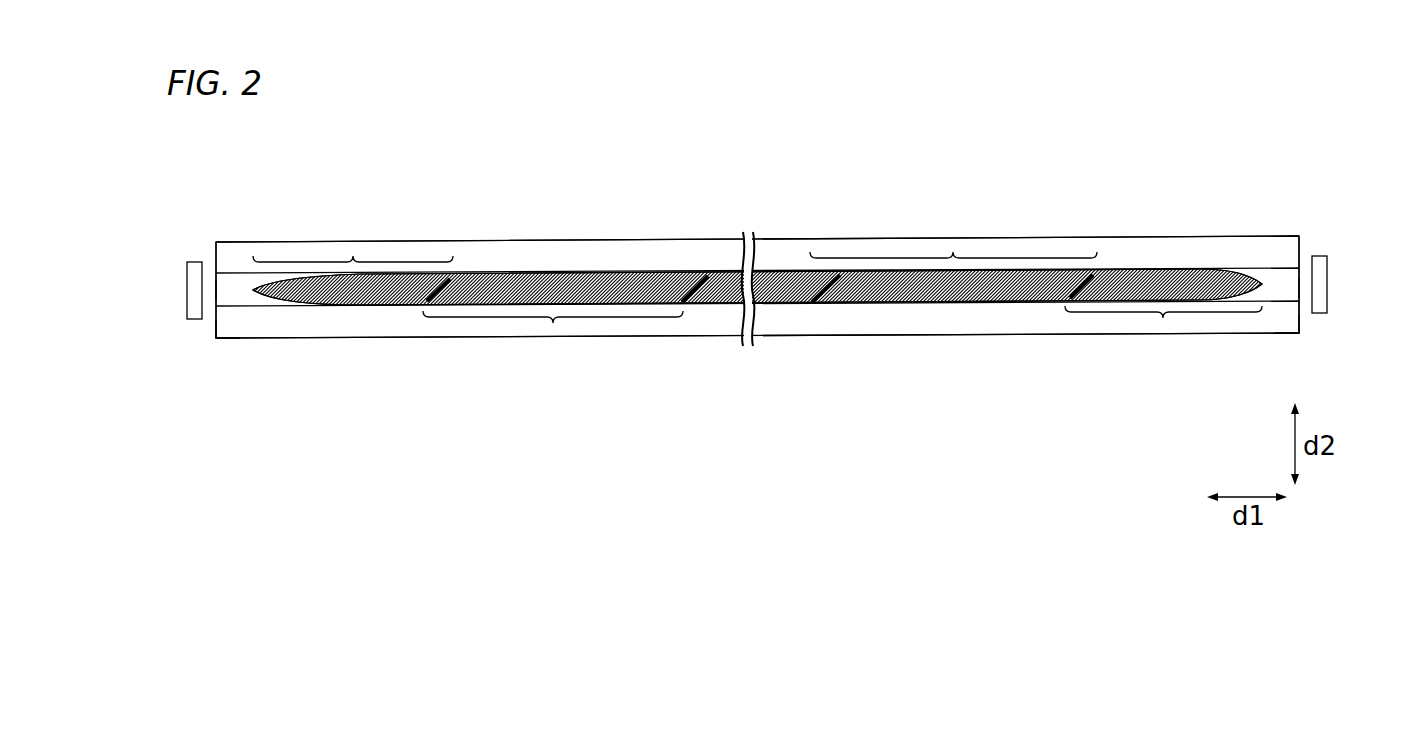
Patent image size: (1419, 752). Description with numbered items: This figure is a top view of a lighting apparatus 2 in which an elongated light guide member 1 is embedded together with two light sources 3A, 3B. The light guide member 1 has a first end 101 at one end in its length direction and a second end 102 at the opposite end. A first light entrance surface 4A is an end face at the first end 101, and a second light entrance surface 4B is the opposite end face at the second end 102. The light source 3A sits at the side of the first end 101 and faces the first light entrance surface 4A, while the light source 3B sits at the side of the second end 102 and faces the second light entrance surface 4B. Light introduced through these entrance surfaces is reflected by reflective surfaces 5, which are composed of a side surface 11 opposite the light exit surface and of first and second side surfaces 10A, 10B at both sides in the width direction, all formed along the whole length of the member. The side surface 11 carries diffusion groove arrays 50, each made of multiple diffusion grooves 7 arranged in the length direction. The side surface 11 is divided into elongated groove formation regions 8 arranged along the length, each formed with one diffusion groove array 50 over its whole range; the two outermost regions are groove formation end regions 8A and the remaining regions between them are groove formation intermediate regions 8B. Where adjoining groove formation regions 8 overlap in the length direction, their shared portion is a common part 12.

The light guide member 1 is at (1098, 243).
The lighting apparatus 2 is at (869, 208).
The light source 3A is at (187, 280).
The light source 3B is at (1327, 271).
The first light entrance surface 4A is at (215, 291).
The second light entrance surface 4B is at (1299, 288).
The reflective surface 5 is at (1247, 327).
The diffusion groove 7 is at (503, 288).
The groove formation region 8 is at (757, 287).
The groove formation end region 8A is at (353, 256).
The groove formation intermediate region 8B is at (553, 323).
The first side surface 10A is at (705, 320).
The second side surface 10B is at (702, 256).
The side surface 11 is at (237, 301).
The common part 12 is at (438, 300).
The diffusion groove array 50 is at (617, 288).
The first end 101 is at (216, 319).
The second end 102 is at (1299, 313).